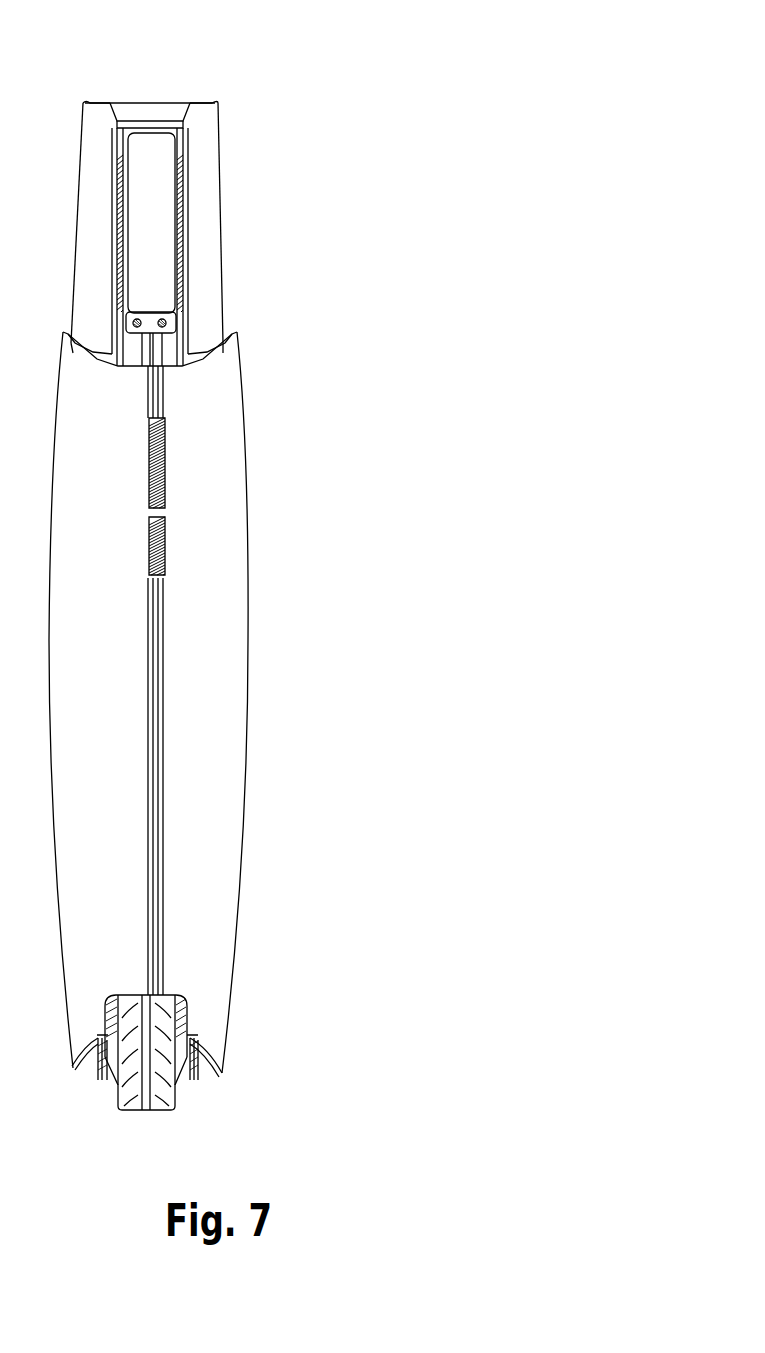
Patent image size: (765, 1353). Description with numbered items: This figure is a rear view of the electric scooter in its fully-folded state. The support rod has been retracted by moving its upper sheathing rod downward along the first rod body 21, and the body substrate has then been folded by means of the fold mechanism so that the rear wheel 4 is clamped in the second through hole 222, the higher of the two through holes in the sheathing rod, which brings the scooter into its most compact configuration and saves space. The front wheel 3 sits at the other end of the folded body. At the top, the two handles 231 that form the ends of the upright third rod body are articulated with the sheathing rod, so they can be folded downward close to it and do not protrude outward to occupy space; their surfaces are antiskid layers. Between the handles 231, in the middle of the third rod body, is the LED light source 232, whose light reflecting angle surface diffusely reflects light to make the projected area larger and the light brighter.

The front wheel 3 is at (187, 1027).
The rear wheel 4 is at (175, 187).
The first rod body 21 is at (252, 642).
The second through hole 222 is at (183, 142).
The handles 231 is at (205, 225).
The LED light source 232 is at (160, 105).